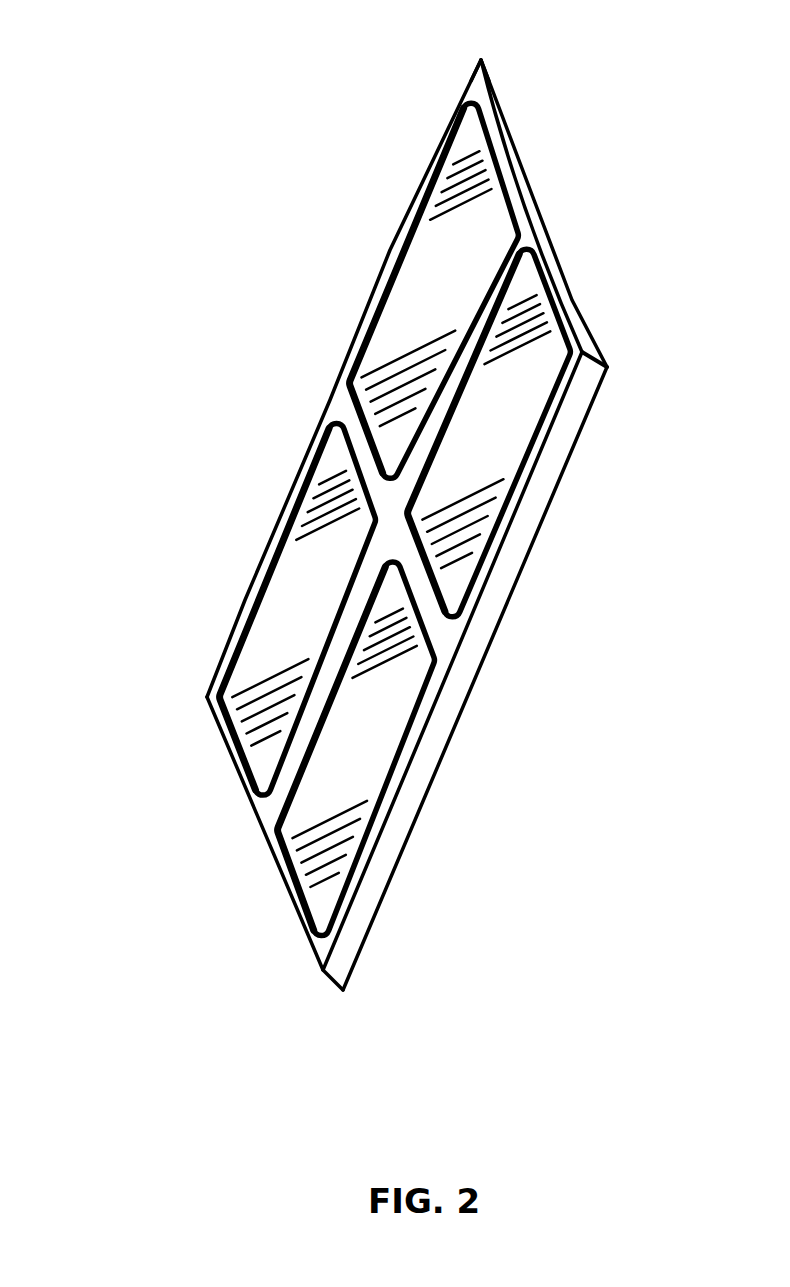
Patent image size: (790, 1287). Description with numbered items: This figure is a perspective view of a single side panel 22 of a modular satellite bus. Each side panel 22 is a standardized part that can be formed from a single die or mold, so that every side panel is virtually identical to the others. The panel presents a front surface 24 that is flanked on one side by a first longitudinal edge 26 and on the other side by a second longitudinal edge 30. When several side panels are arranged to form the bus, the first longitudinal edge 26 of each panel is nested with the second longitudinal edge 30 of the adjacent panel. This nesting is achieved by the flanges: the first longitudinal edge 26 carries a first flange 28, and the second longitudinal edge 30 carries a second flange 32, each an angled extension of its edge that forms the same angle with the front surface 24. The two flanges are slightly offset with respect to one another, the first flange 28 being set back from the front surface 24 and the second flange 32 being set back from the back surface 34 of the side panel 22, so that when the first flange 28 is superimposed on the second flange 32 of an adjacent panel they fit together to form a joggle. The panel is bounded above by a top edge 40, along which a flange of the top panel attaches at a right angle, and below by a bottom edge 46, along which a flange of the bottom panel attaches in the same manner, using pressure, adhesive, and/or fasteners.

The side panel 22 is at (146, 59).
The front surface 24 is at (398, 735).
The first longitudinal edge 26 is at (352, 352).
The first flange 28 is at (480, 61).
The second longitudinal edge 30 is at (485, 612).
The second flange 32 is at (608, 366).
The back surface 34 is at (509, 121).
The top edge 40 is at (523, 193).
The bottom edge 46 is at (247, 797).